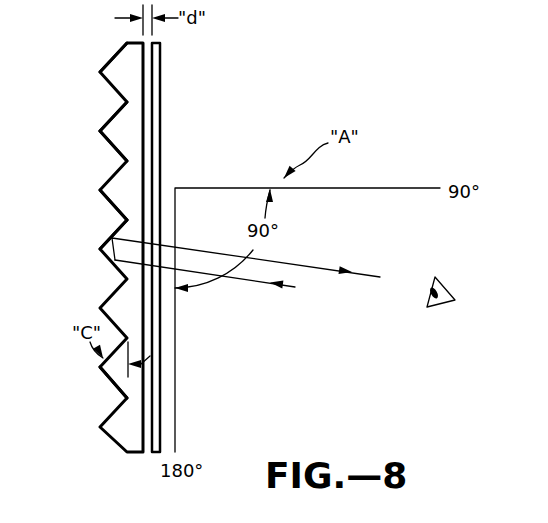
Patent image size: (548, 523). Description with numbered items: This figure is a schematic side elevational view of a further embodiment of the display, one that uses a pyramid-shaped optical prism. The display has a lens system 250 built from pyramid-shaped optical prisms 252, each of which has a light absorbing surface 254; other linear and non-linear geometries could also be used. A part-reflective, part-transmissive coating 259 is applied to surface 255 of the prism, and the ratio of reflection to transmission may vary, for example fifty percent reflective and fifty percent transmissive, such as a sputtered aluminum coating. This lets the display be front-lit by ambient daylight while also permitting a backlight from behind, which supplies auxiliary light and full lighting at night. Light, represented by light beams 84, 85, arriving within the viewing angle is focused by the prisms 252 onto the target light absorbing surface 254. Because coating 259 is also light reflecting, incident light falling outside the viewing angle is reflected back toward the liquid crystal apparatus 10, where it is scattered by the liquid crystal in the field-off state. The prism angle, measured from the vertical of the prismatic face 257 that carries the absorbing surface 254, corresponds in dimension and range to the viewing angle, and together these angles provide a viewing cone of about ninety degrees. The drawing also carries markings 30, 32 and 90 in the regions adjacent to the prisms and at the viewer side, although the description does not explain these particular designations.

The liquid crystal apparatus 10 is at (156, 43).
The viewing region 30 is at (265, 73).
The serrated surface 32 is at (80, 247).
The light beam 84 is at (262, 288).
The light beam 85 is at (322, 268).
The observer eye 90 is at (447, 288).
The lens system 250 is at (106, 108).
The pyramid-shaped optical prism 252 is at (113, 146).
The light absorbing surface 254 is at (107, 66).
The surface 255 is at (118, 214).
The prismatic face 257 is at (104, 361).
The part-reflective, part-transmissive coating 259 is at (112, 207).